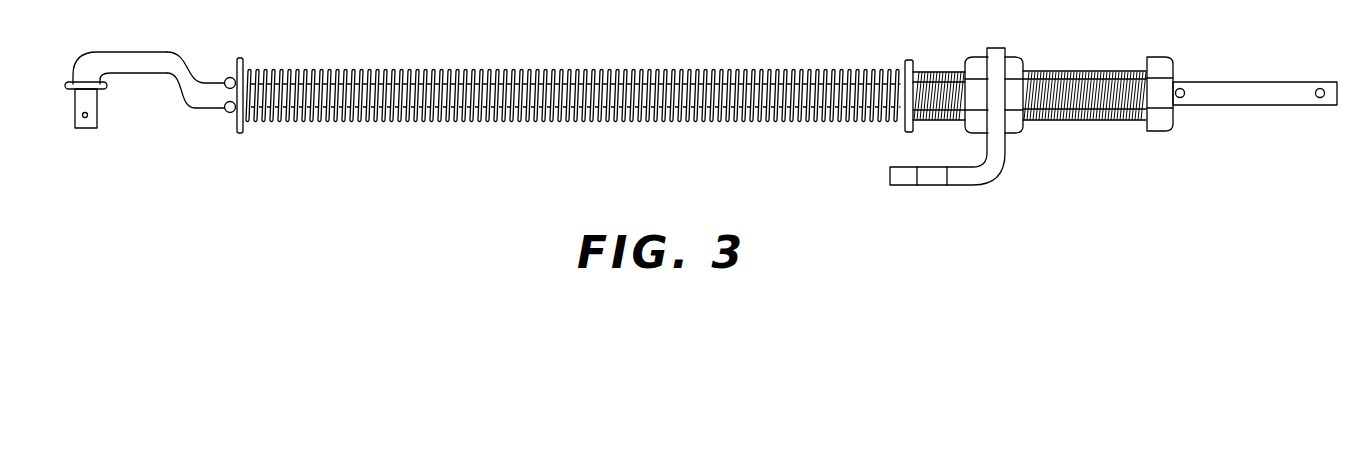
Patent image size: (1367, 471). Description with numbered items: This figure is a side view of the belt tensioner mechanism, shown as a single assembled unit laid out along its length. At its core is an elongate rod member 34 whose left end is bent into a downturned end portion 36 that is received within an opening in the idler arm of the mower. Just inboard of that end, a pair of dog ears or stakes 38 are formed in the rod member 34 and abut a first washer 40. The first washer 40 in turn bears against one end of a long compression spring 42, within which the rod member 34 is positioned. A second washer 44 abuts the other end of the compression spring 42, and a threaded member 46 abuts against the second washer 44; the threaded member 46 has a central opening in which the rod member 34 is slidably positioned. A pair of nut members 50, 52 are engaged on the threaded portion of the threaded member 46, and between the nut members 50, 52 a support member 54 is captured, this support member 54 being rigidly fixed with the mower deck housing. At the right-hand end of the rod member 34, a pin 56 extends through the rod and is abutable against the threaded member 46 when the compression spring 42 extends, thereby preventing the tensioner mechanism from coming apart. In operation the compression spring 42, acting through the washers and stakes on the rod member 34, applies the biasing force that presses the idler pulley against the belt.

The rod member 34 is at (1240, 82).
The downturned end portion 36 is at (72, 105).
The dog ears or stakes 38 is at (228, 78).
The first washer 40 is at (241, 58).
The compression spring 42 is at (470, 70).
The second washer 44 is at (908, 59).
The threaded member 46 is at (1095, 68).
The nut member 50 is at (975, 57).
The nut member 52 is at (1011, 57).
The support member 54 is at (996, 178).
The pin 56 is at (1320, 99).